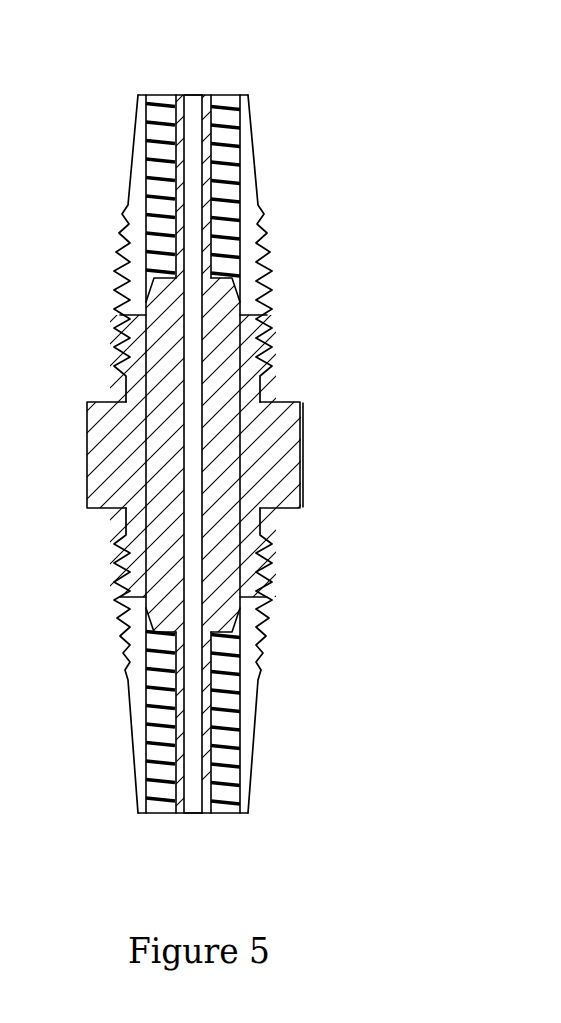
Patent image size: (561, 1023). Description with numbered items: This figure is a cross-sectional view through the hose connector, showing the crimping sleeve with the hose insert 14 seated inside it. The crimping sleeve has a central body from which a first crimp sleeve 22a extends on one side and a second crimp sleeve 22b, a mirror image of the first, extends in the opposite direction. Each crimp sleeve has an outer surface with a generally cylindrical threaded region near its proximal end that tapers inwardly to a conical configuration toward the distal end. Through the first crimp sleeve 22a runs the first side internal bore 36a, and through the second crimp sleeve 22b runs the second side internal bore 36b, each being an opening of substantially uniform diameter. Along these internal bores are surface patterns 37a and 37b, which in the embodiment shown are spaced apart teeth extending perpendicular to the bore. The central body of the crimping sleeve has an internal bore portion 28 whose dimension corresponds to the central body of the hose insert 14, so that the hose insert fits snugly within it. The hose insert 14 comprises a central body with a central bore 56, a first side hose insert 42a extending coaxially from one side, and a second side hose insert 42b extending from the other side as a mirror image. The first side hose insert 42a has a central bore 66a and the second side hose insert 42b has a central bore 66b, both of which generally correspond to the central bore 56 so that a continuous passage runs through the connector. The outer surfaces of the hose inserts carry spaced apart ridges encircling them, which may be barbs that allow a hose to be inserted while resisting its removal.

The hose insert 14 is at (242, 437).
The first crimp sleeve 22a is at (330, 242).
The second crimp sleeve 22b is at (332, 679).
The internal bore portion 28 is at (126, 459).
The first side internal bore 36a is at (193, 77).
The second side internal bore 36b is at (210, 839).
The surface patterns 37a is at (230, 145).
The surface patterns 37b is at (225, 730).
The first side hose insert 42a is at (215, 198).
The second side hose insert 42b is at (222, 655).
The central bore 56 is at (193, 550).
The central bore 66a is at (167, 142).
The central bore 66b is at (175, 730).